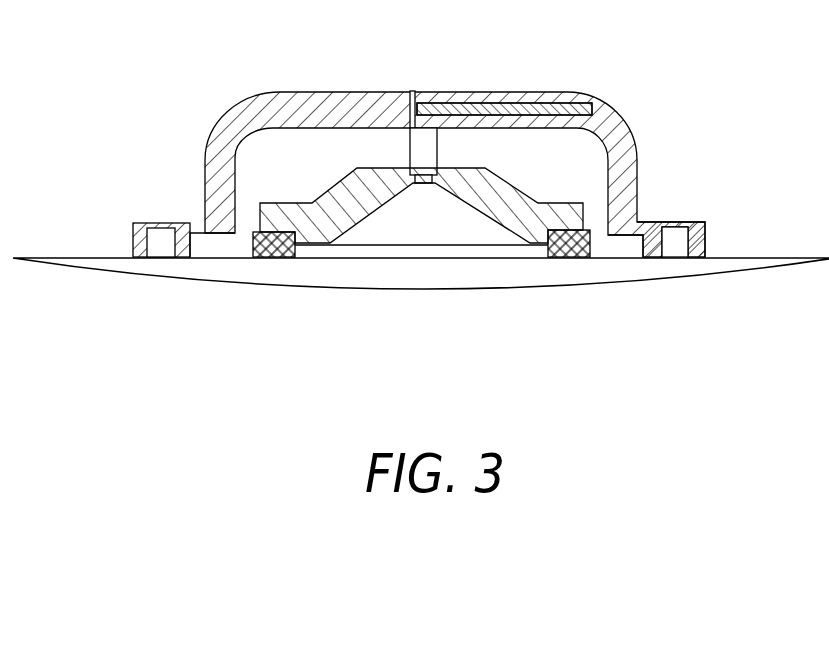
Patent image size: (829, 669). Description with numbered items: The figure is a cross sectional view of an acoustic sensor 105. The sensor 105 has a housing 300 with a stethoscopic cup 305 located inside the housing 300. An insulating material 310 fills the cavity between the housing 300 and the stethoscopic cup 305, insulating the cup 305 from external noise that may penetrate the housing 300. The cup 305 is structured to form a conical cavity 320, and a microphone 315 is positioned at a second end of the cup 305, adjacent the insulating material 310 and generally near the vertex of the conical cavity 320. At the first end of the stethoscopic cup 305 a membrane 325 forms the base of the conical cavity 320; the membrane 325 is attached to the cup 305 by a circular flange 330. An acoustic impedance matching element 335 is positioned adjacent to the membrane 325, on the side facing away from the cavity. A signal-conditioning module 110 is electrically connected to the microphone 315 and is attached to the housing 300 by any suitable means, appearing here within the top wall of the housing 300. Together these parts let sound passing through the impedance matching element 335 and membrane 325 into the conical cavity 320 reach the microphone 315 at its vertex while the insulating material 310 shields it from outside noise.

The acoustic sensor 105 is at (117, 58).
The signal-conditioning module 110 is at (495, 107).
The housing 300 is at (629, 171).
The stethoscopic cup 305 is at (538, 230).
The insulating material 310 is at (284, 145).
The microphone 315 is at (423, 148).
The conical cavity 320 is at (424, 232).
The membrane 325 is at (333, 250).
The circular flange 330 is at (278, 260).
The acoustic impedance matching element 335 is at (620, 284).